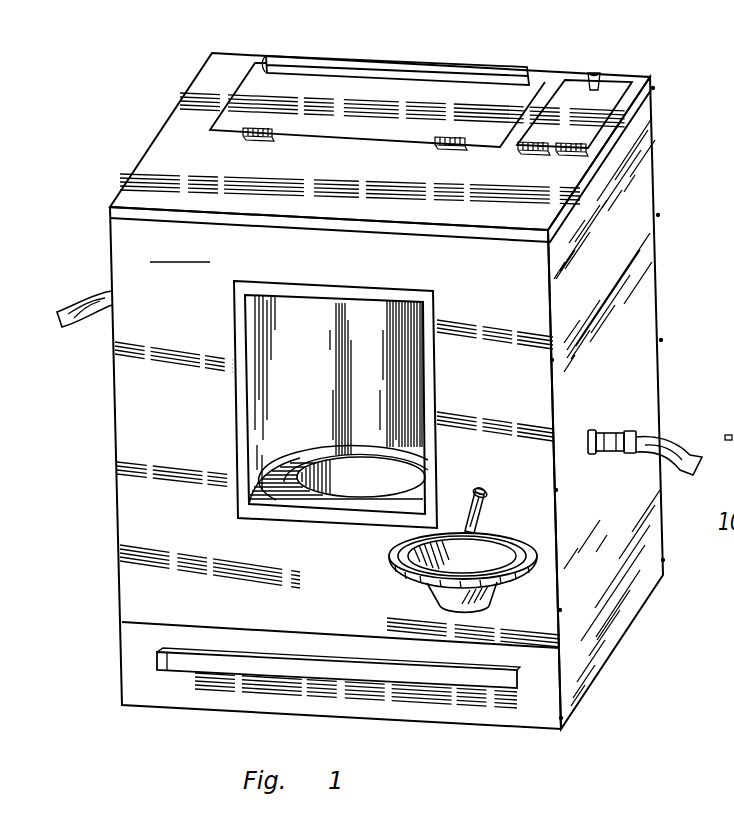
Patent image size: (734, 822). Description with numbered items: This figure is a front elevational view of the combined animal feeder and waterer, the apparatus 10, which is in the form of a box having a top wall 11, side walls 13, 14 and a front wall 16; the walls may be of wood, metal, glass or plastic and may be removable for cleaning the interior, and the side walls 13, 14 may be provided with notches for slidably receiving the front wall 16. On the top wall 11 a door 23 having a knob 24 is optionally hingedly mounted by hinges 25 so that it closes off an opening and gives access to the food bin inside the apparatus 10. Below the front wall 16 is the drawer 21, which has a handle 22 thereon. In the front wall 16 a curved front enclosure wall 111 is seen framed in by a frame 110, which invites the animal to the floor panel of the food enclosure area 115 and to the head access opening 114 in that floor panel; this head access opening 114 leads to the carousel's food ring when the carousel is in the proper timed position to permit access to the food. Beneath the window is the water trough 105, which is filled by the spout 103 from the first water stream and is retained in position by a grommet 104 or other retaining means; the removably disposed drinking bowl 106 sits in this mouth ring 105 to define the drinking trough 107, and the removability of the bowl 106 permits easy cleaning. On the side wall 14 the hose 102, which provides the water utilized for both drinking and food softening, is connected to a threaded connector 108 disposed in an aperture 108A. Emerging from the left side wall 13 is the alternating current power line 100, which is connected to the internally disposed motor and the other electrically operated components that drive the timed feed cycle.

The apparatus 10 is at (534, 50).
The top wall 11 is at (172, 136).
The side wall 13 is at (120, 570).
The side wall 14 is at (648, 262).
The front wall 16 is at (184, 276).
The drawer 21 is at (175, 697).
The handle 22 is at (220, 667).
The door 23 is at (338, 63).
The knob 24 is at (248, 100).
The hinges 25 is at (256, 141).
The alternating current power line 100 is at (96, 268).
The hose 102 is at (672, 438).
The spout 103 is at (478, 518).
The grommet 104 is at (486, 491).
The water trough 105 is at (392, 555).
The drinking bowl 106 is at (448, 547).
The drinking trough 107 is at (386, 592).
The threaded connector 108 is at (622, 428).
The aperture 108A is at (591, 430).
The frame 110 is at (425, 380).
The curved front enclosure wall 111 is at (318, 377).
The head access opening 114 is at (333, 458).
The food enclosure area 115 is at (331, 328).